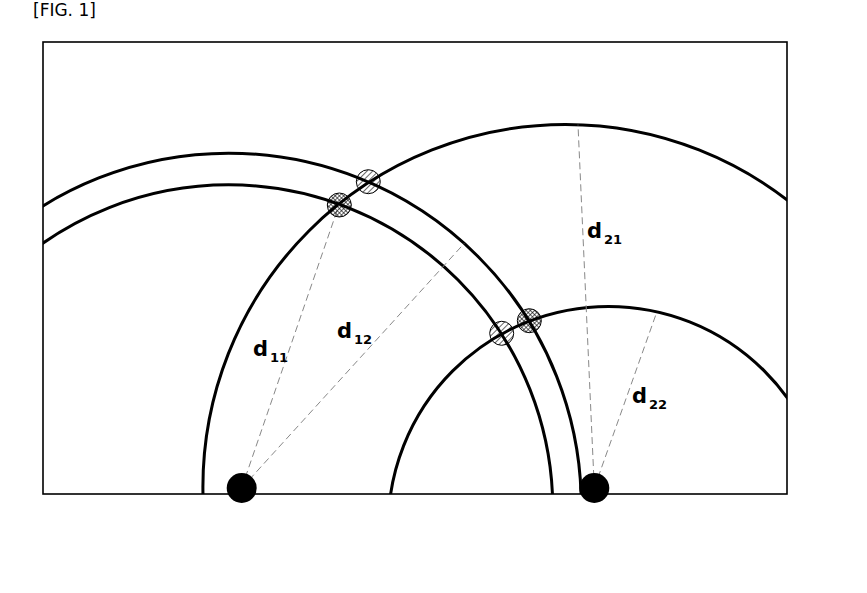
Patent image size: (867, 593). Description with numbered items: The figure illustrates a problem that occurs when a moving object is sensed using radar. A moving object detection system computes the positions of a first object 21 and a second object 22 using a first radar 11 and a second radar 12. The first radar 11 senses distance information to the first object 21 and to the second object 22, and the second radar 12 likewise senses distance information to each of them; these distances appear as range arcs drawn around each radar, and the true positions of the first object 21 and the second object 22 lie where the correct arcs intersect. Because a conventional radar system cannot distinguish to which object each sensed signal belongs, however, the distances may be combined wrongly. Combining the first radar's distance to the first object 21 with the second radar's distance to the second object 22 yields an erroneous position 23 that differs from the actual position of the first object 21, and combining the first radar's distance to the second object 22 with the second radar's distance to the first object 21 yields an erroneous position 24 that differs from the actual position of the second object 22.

The first radar 11 is at (240, 504).
The second radar 12 is at (594, 504).
The first object 21 is at (327, 205).
The second object 22 is at (530, 308).
The erroneous position 23 is at (497, 347).
The erroneous position 24 is at (364, 169).